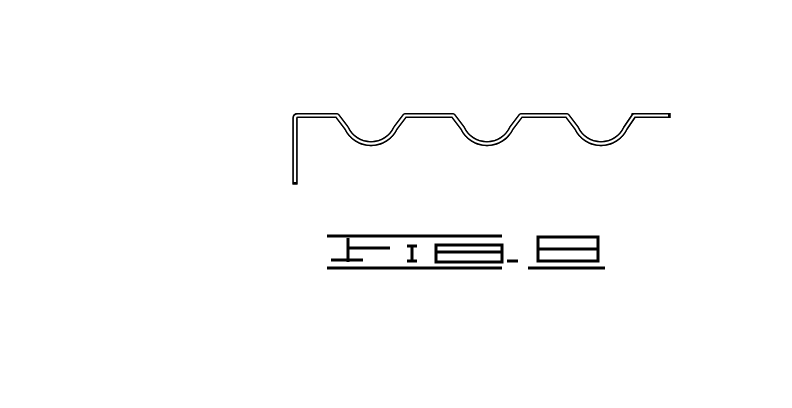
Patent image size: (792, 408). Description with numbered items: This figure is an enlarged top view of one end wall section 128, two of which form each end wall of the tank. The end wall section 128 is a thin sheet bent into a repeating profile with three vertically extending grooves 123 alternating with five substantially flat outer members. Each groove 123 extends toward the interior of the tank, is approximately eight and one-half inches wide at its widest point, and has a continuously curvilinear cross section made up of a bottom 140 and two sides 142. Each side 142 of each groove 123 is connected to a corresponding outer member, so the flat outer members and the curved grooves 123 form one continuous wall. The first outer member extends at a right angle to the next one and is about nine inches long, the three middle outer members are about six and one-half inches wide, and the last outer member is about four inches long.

The end wall section 128 is at (275, 87).
The groove 123 is at (377, 125).
The side 142 is at (356, 143).
The bottom 140 is at (377, 147).